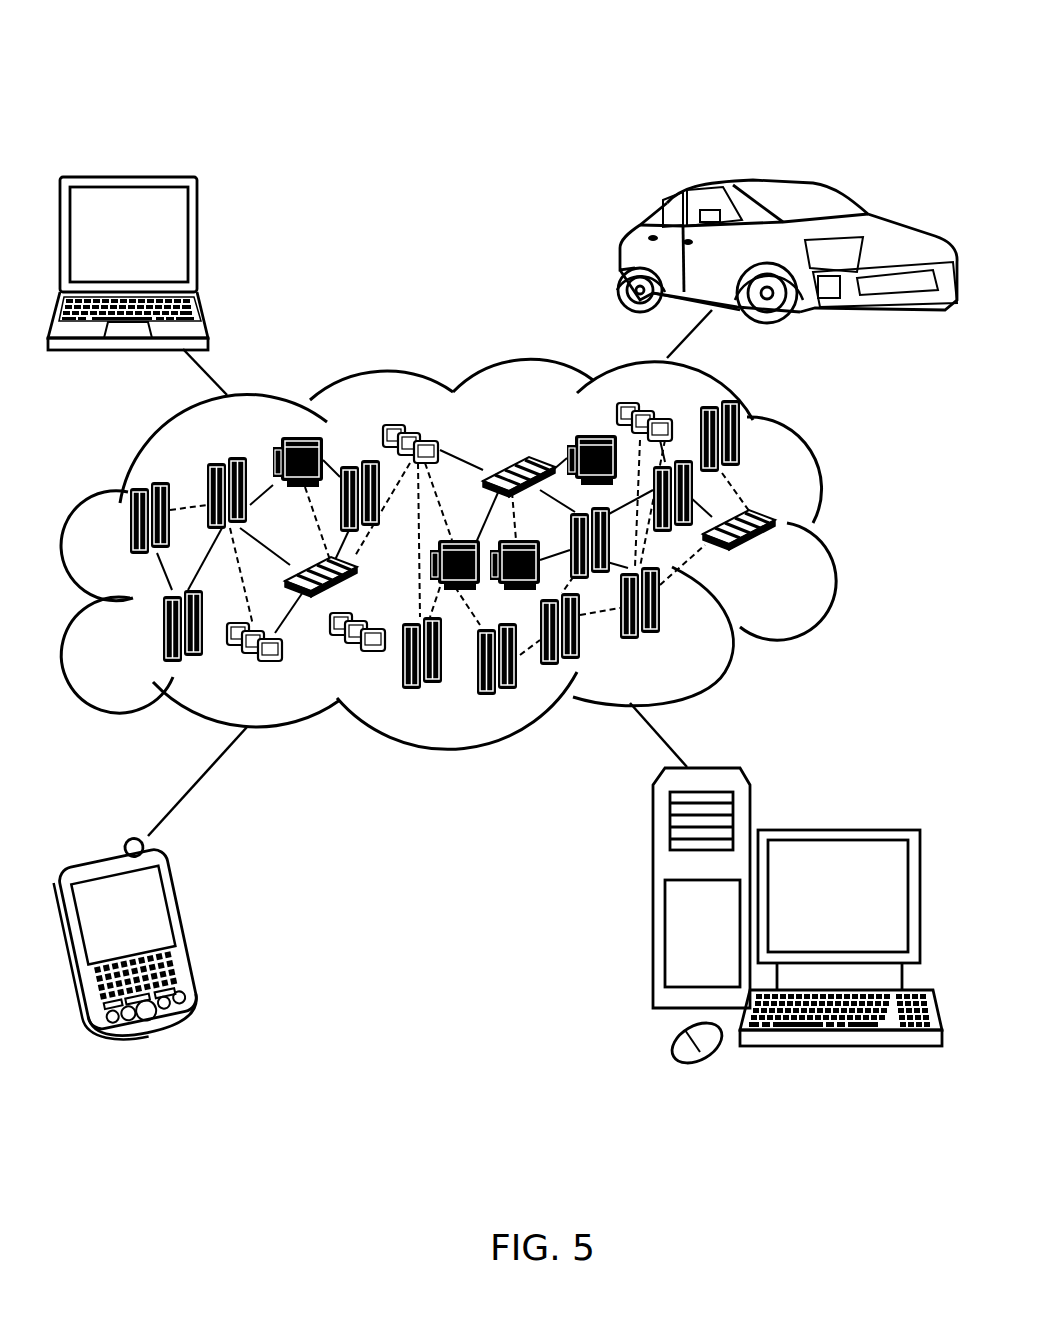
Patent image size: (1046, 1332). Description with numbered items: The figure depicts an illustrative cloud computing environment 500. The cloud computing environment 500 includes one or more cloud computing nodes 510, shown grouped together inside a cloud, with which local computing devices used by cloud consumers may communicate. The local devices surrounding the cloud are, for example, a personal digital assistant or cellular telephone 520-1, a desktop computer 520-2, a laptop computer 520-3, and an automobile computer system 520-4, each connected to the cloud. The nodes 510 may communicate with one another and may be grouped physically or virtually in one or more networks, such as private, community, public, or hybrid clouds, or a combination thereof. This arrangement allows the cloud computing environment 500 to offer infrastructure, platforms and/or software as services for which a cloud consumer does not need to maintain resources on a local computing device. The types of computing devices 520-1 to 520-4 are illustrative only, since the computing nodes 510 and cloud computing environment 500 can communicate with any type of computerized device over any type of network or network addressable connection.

The cloud computing environment 500 is at (784, 37).
The cloud computing nodes 510 is at (786, 563).
The personal digital assistant or cellular telephone 520-1 is at (187, 930).
The desktop computer 520-2 is at (837, 828).
The laptop computer 520-3 is at (197, 242).
The automobile computer system 520-4 is at (620, 258).